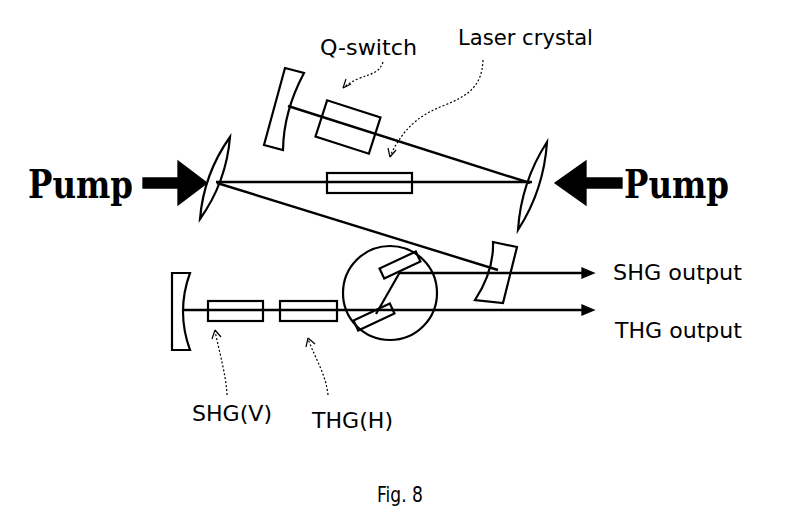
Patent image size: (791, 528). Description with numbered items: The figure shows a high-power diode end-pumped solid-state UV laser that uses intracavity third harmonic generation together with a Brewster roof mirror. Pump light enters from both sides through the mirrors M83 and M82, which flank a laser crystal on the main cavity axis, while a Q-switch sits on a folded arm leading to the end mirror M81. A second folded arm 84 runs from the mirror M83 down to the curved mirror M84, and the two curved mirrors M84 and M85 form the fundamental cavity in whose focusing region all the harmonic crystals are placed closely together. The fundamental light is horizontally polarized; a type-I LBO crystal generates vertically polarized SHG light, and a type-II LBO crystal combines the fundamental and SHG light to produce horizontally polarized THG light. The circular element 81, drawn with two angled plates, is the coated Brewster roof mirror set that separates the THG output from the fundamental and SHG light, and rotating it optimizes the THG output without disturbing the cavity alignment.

The polarization rotator / beam rotating element 81 is at (407, 342).
The folded resonator arm (beam path) 84 is at (357, 226).
The curved end mirror M81 is at (281, 96).
The dichroic folding mirror M82 is at (545, 171).
The dichroic folding mirror M83 is at (202, 164).
The curved mirror M84 is at (522, 272).
The curved mirror M85 is at (146, 311).